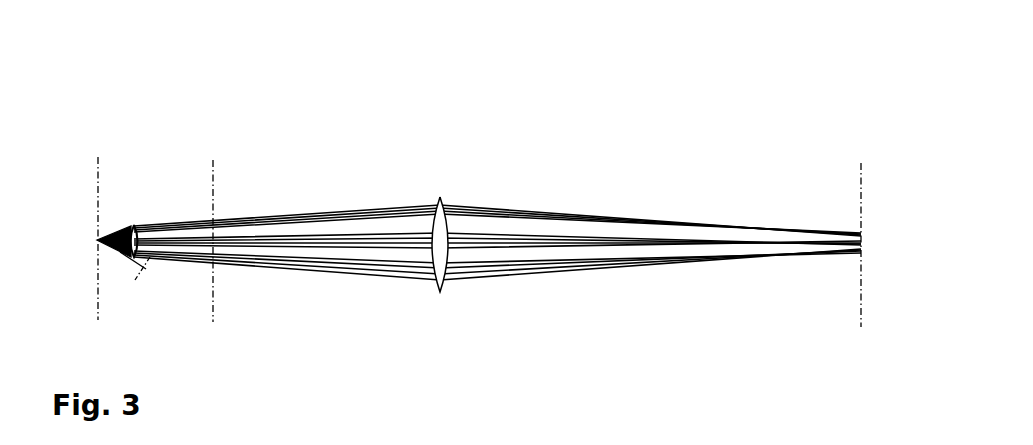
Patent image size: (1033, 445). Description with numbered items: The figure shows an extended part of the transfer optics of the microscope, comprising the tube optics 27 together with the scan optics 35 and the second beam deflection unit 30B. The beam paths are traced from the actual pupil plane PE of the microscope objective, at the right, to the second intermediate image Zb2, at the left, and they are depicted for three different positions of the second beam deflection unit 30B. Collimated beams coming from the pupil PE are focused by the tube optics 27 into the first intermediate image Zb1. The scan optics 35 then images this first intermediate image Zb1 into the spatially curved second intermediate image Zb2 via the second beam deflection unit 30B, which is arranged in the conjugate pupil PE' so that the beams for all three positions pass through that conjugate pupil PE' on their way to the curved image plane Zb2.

The tube optics 27 is at (440, 197).
The scan optics 35 is at (133, 225).
The second beam deflection unit 30B is at (96, 243).
The pupil plane PE is at (847, 219).
The conjugate pupil PE' is at (84, 214).
The first intermediate image Zb1 is at (213, 160).
The second intermediate image Zb2 is at (135, 280).